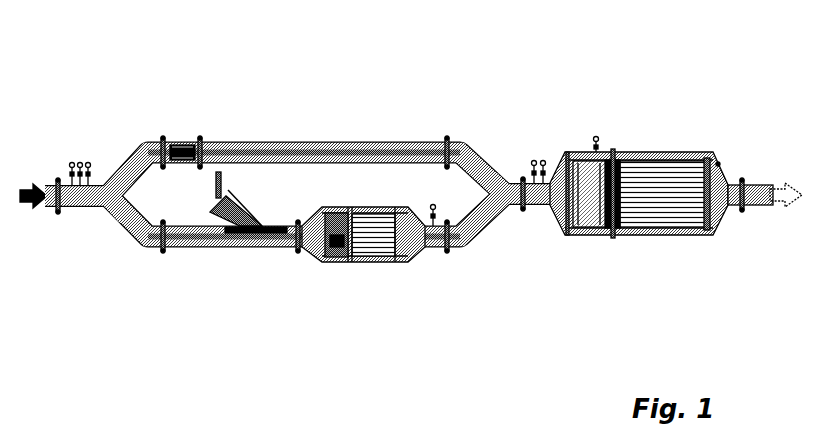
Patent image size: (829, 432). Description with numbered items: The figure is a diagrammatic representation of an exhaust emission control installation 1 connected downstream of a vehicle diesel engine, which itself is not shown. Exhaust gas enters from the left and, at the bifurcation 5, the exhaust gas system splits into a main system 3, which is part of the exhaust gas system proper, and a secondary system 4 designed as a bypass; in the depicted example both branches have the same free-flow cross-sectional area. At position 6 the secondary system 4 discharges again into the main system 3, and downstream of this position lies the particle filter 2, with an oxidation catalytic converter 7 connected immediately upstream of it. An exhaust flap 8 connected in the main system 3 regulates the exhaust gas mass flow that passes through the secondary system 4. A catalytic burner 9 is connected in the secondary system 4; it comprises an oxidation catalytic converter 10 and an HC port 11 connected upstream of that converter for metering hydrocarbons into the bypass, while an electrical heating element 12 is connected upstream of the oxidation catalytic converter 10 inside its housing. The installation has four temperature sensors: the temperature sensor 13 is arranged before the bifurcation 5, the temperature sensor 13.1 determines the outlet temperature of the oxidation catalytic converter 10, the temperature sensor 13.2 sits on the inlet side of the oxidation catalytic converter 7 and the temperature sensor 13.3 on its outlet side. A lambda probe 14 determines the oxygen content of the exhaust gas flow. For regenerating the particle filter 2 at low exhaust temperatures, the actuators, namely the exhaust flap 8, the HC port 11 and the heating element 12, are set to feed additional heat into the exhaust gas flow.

The exhaust emission control installation 1 is at (411, 165).
The particle filter 2 is at (676, 187).
The main system 3 is at (285, 140).
The secondary system 4 is at (185, 250).
The bifurcation 5 is at (98, 210).
The discharge position 6 is at (512, 208).
The oxidation catalytic converter 7 is at (588, 202).
The exhaust flap 8 is at (183, 141).
The catalytic burner 9 is at (317, 244).
The oxidation catalytic converter 10 is at (363, 262).
The HC port 11 is at (259, 222).
The electrical heating element 12 is at (335, 256).
The temperature sensor 13 is at (72, 162).
The temperature sensor 13.1 is at (431, 203).
The temperature sensor 13.2 is at (543, 160).
The temperature sensor 13.3 is at (597, 136).
The lambda probe 14 is at (90, 161).